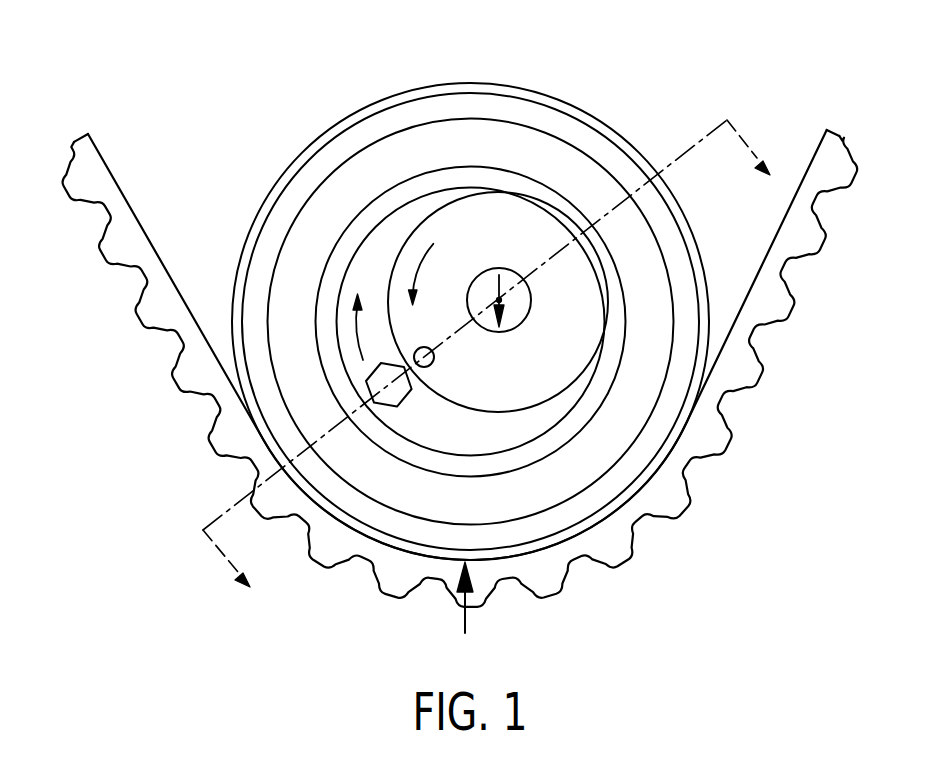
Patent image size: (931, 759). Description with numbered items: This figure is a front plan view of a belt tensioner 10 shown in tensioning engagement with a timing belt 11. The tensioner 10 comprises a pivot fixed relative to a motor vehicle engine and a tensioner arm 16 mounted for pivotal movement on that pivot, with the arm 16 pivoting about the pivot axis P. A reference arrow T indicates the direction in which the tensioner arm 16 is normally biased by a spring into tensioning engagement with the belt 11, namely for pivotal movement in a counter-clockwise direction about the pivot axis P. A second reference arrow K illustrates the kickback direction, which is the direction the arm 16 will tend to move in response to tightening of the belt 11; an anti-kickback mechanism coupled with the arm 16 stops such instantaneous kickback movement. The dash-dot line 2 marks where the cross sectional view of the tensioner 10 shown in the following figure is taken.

The belt tensioner 10 is at (642, 102).
The timing belt 11 is at (750, 377).
The tensioner arm 16 is at (463, 215).
The section line 2— 2 is at (496, 373).
The pivot axis P is at (501, 301).
The tensioning direction arrow T is at (400, 266).
The kickback direction arrow K is at (363, 333).